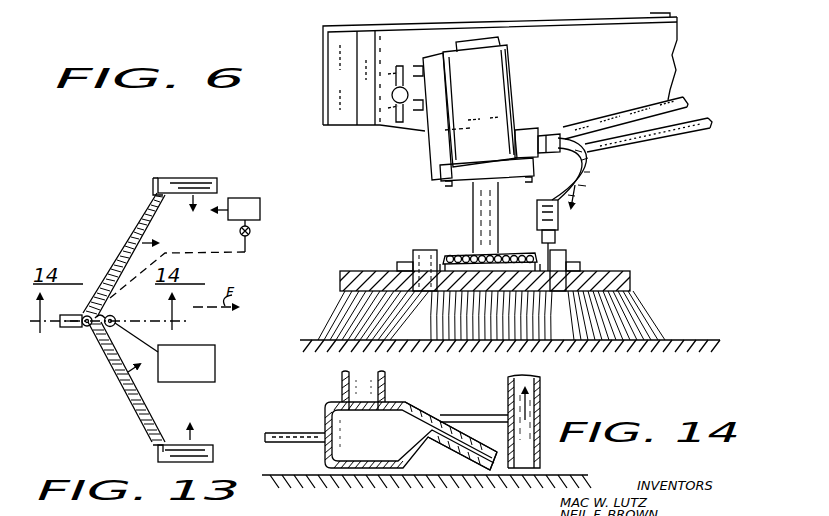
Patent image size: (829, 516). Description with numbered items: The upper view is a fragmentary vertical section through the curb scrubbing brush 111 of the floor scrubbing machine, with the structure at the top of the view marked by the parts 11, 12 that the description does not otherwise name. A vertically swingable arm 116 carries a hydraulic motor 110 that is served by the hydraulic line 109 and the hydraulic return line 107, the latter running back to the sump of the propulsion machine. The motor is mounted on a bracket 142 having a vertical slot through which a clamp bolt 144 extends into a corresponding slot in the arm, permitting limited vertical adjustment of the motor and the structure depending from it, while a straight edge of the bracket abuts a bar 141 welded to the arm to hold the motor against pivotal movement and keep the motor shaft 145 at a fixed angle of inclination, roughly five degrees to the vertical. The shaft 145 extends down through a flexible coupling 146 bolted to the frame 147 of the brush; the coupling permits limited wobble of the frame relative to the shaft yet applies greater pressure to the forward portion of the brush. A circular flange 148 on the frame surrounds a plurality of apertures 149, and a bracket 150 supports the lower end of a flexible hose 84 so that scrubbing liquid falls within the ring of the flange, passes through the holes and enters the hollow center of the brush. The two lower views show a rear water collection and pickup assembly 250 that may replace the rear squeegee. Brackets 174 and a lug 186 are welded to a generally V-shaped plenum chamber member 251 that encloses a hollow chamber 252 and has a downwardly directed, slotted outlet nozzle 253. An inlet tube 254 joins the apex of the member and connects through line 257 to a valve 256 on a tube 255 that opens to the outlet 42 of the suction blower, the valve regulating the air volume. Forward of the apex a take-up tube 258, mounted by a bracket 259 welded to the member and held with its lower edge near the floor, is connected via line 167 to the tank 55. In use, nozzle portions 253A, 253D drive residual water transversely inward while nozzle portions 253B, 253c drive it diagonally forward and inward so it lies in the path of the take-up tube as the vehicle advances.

In FIG. 6, the frame 11 is at (575, 19).
In FIG. 6, the housing 12 is at (425, 24).
In FIG. 6, the vertically swingable arm 116 is at (678, 20).
In FIG. 6, the bar 141 is at (367, 107).
In FIG. 6, the bracket 142 is at (413, 40).
In FIG. 6, the clamp bolt 144 is at (397, 100).
In FIG. 6, the hydraulic motor 110 is at (483, 82).
In FIG. 6, the hydraulic return line 107 is at (673, 100).
In FIG. 6, the hydraulic line 109 is at (687, 110).
In FIG. 6, the flexible hose 84 is at (560, 180).
In FIG. 6, the bracket 150 is at (537, 222).
In FIG. 6, the motor shaft 145 is at (482, 200).
In FIG. 6, the flexible coupling 146 is at (463, 260).
In FIG. 6, the circular flange 148 is at (415, 253).
In FIG. 6, the frame 147 is at (590, 283).
In FIG. 6, the curb scrubbing brush 111 is at (628, 275).
In FIG. 6, the apertures 149 is at (427, 290).
In FIG. 13, the nozzle portion 253A is at (193, 183).
In FIG. 13, the brackets 174 is at (157, 183).
In FIG. 13, the plenum chamber member 251 is at (140, 208).
In FIG. 14, the plenum chamber member 251 is at (325, 403).
In FIG. 13, the nozzle portion 253B is at (128, 240).
In FIG. 13, the line 257 is at (152, 267).
In FIG. 13, the outlet of the suction blower 42 is at (250, 200).
In FIG. 13, the valve 256 is at (250, 229).
In FIG. 13, the tube 255 is at (247, 244).
In FIG. 13, the take-up tube 258 is at (113, 318).
In FIG. 14, the take-up tube 258 is at (540, 458).
In FIG. 13, the lug 186 is at (72, 328).
In FIG. 14, the lug 186 is at (300, 435).
In FIG. 13, the line 167 is at (153, 342).
In FIG. 13, the tank 55 is at (186, 363).
In FIG. 13, the rear water collection and pickup assembly 250 is at (100, 362).
In FIG. 13, the nozzle portion 253c is at (130, 393).
In FIG. 13, the nozzle portion 253D is at (228, 415).
In FIG. 14, the hollow chamber 252 is at (333, 437).
In FIG. 14, the inlet tube 254 is at (388, 393).
In FIG. 14, the bracket 259 is at (487, 397).
In FIG. 14, the outlet nozzle 253 is at (478, 463).